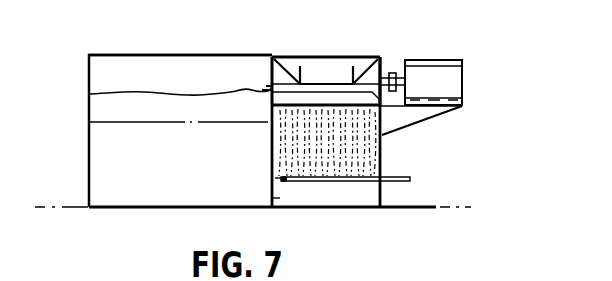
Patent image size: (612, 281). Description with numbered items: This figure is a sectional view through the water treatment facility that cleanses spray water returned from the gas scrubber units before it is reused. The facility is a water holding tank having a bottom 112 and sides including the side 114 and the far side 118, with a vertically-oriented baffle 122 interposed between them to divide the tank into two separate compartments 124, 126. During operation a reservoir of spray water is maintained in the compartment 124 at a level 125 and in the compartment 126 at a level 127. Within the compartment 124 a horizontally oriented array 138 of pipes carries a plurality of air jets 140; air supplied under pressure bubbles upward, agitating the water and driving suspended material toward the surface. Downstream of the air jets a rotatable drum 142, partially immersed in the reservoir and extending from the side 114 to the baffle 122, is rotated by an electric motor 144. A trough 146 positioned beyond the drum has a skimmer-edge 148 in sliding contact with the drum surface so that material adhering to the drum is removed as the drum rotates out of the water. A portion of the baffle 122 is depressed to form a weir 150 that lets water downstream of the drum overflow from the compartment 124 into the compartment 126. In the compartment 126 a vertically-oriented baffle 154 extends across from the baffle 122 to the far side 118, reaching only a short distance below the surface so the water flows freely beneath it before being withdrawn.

The bottom 112 is at (130, 207).
The side 114 is at (383, 152).
The side 118 is at (89, 158).
The vertically-oriented baffle 122 is at (272, 198).
The tank compartment 124 is at (315, 147).
The water level 125 is at (374, 62).
The tank compartment 126 is at (175, 170).
The water level 127 is at (137, 92).
The array of pipes 138 is at (360, 181).
The air jets 140 is at (278, 178).
The rotatable drum 142 is at (383, 118).
The electric motor 144 is at (448, 90).
The trough 146 is at (328, 72).
The skimmer-edge 148 is at (316, 57).
The weir 150 is at (268, 92).
The vertically-oriented baffle 154 is at (93, 78).